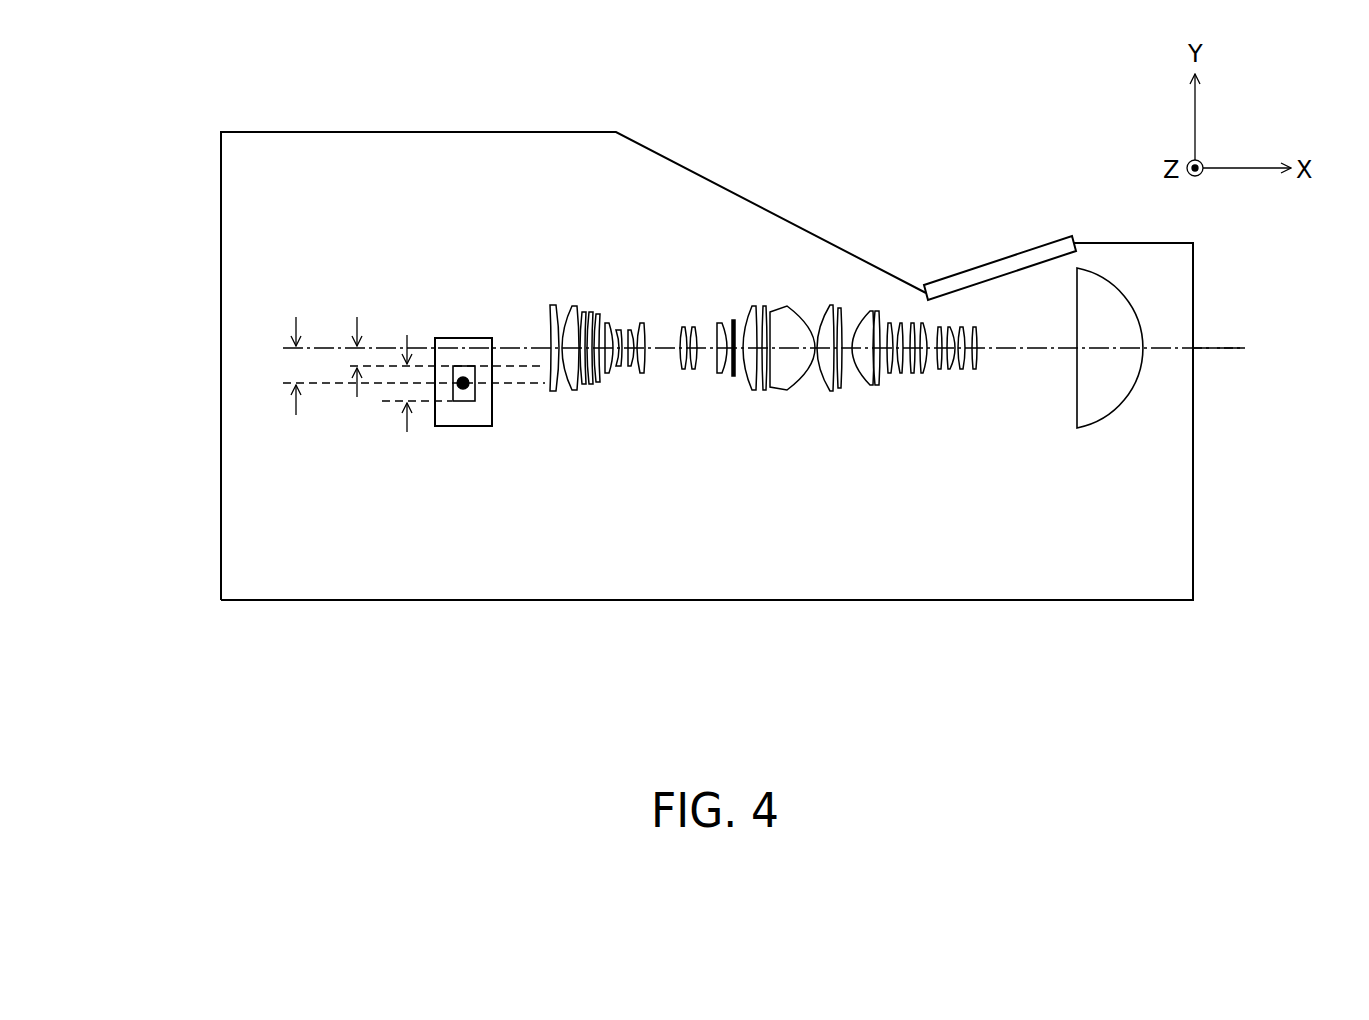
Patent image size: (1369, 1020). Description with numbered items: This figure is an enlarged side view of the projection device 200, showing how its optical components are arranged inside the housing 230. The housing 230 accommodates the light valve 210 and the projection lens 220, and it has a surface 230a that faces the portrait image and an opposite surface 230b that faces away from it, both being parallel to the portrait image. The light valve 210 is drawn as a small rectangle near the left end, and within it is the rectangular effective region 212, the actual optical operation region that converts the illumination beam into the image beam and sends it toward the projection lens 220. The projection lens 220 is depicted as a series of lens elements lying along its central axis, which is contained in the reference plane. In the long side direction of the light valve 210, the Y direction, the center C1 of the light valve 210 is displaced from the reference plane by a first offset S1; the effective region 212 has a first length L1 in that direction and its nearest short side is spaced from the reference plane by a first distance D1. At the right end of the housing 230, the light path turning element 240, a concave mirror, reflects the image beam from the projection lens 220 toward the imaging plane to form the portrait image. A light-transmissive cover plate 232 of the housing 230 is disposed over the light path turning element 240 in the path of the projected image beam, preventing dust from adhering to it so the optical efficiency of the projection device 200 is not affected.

The projection device 200 is at (1152, 624).
The light valve 210 is at (443, 427).
The effective region 212 is at (472, 392).
The projection lens 220 is at (977, 408).
The housing 230 is at (680, 601).
The surface 230a is at (219, 399).
The surface 230b is at (1197, 540).
The light-transmissive cover plate 232 is at (1055, 236).
The light path turning element 240 is at (1076, 415).
The center of the light valve C1 is at (464, 389).
The first distance D1 is at (357, 357).
The first length L1 is at (407, 377).
The first offset S1 is at (284, 366).